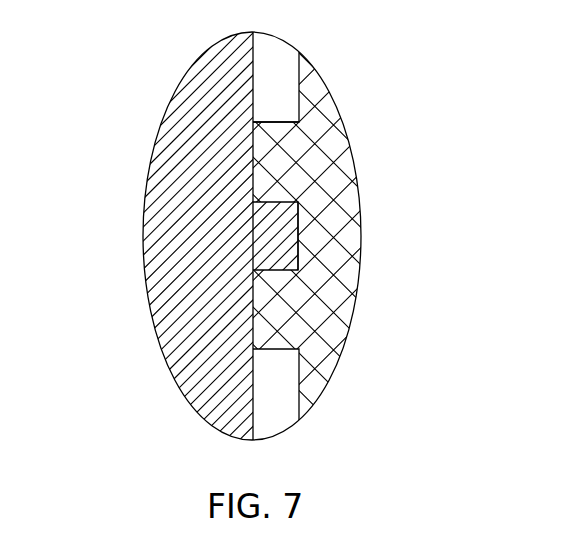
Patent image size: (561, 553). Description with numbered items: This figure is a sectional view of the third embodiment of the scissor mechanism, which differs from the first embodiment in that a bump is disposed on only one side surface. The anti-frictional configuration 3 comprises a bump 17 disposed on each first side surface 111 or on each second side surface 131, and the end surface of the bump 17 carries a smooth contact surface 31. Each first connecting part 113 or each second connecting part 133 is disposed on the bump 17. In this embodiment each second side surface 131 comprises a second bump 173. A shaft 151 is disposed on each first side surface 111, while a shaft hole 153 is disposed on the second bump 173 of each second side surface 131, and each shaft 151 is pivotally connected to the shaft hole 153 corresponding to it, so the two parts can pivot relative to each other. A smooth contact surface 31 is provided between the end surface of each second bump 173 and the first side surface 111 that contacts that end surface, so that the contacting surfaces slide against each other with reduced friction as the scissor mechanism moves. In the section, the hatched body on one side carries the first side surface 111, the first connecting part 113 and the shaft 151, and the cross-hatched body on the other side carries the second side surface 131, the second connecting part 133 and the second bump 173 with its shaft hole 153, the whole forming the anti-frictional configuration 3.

The anti-frictional configuration 3 is at (323, 377).
The bump 17 is at (283, 184).
The smooth contact surface 31 is at (258, 136).
The first side surface 111 is at (252, 50).
The first connecting part 113 is at (235, 263).
The second side surface 131 is at (300, 88).
The second connecting part 133 is at (322, 258).
The shaft 151 is at (278, 236).
The shaft hole 153 is at (305, 229).
The second bump 173 is at (278, 340).